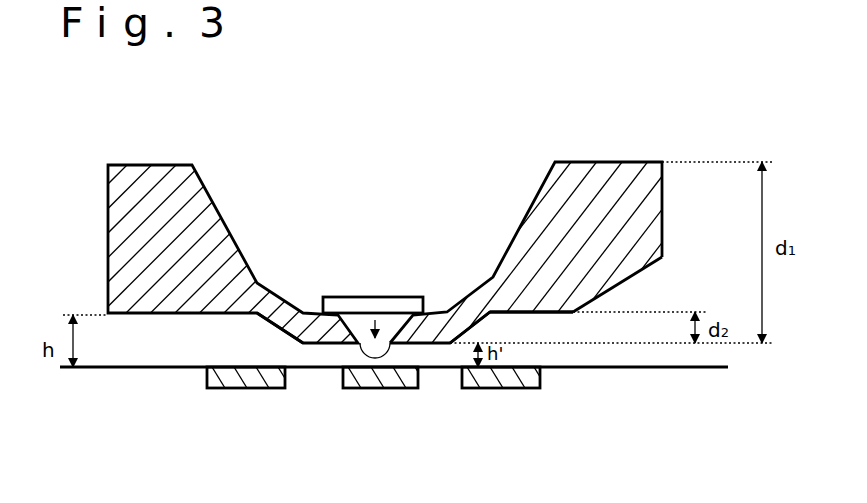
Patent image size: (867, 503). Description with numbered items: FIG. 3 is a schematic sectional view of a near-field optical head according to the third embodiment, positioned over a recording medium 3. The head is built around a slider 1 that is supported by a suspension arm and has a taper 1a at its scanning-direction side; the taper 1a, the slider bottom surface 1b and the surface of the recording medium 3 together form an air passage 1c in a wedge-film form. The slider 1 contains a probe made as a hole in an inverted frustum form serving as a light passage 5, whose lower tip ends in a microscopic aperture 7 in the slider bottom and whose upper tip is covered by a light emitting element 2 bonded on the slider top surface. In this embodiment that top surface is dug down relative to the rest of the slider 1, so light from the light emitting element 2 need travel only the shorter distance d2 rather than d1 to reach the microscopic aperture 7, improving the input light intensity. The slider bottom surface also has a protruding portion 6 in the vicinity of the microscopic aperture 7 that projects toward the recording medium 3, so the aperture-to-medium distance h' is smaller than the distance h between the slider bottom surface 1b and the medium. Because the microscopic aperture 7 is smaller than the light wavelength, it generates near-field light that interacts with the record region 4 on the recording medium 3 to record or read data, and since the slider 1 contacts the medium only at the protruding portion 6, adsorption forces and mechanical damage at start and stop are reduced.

The slider 1 is at (587, 210).
The taper 1a is at (649, 277).
The slider bottom surface 1b is at (543, 313).
The air passage 1c is at (610, 327).
The light emitting element 2 is at (390, 303).
The recording medium 3 is at (394, 385).
The record region 4 is at (520, 388).
The light passage 5 is at (362, 325).
The protruding portion 6 is at (318, 347).
The microscopic aperture 7 is at (380, 350).